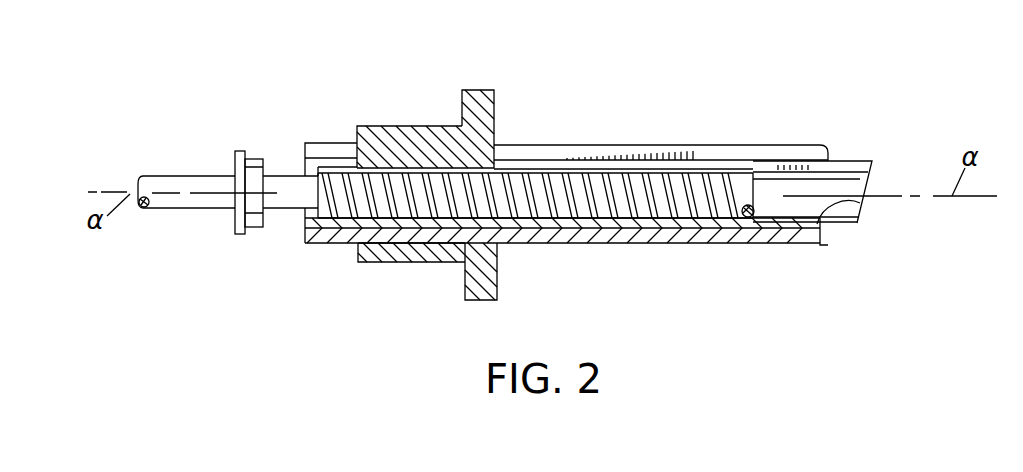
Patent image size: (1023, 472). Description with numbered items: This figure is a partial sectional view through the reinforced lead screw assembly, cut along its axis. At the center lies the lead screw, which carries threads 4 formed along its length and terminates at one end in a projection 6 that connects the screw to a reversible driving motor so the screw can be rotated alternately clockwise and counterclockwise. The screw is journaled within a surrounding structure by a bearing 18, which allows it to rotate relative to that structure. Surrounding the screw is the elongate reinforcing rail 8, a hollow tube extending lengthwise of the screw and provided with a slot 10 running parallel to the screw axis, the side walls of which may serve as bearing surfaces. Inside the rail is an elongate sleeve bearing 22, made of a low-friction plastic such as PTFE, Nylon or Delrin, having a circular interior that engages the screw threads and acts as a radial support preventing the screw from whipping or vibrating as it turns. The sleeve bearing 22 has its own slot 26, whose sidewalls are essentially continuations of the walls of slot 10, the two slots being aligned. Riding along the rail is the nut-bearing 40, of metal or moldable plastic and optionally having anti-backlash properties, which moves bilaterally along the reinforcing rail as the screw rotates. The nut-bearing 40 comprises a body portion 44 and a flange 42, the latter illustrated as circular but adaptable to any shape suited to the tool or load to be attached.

The threads 4 is at (697, 187).
The projection 6 is at (177, 176).
The reinforcing rail 8 is at (782, 146).
The slot 10 is at (608, 167).
The bearing 18 is at (252, 174).
The sleeve bearing 22 is at (842, 162).
The slot 26 is at (860, 203).
The nut-bearing 40 is at (495, 117).
The flange 42 is at (473, 90).
The body portion 44 is at (400, 126).